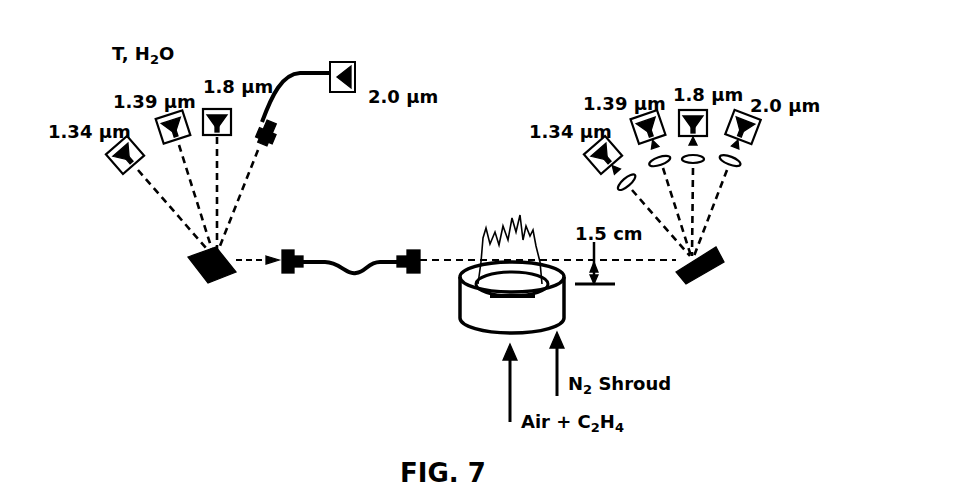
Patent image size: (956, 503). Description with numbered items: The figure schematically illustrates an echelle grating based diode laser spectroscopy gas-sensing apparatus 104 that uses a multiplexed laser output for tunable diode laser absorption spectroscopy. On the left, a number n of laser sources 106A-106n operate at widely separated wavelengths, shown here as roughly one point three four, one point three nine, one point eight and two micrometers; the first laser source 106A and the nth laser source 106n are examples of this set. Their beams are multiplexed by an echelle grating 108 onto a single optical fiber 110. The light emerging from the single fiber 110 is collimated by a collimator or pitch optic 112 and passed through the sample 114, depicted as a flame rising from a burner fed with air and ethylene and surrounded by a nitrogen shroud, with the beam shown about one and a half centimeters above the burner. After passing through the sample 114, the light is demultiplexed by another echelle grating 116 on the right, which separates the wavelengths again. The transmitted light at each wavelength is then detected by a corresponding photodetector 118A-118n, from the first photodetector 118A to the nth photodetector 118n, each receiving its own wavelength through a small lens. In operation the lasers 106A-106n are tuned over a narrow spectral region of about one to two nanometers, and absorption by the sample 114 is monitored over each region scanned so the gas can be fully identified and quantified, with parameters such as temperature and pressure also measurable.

The gas-sensing apparatus 104 is at (524, 46).
The laser source 106A is at (156, 198).
The laser source 106n is at (243, 196).
The echelle grating 108 is at (190, 261).
The optical fiber 110 is at (346, 257).
The collimator or pitch optic 112 is at (404, 250).
The sample 114 is at (508, 236).
The echelle grating 116 is at (722, 257).
The photodetector 118A is at (586, 158).
The photodetector 118n is at (760, 138).